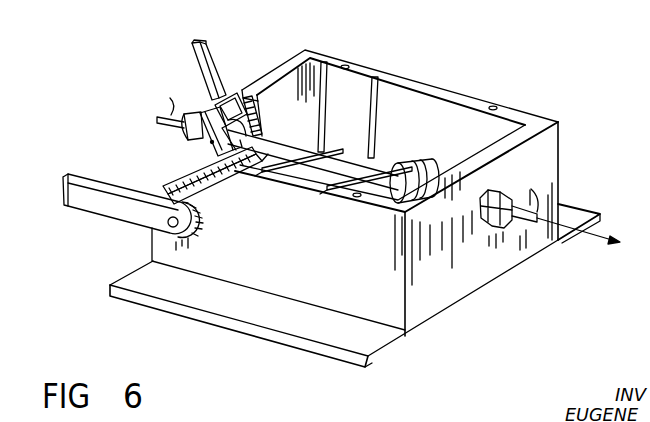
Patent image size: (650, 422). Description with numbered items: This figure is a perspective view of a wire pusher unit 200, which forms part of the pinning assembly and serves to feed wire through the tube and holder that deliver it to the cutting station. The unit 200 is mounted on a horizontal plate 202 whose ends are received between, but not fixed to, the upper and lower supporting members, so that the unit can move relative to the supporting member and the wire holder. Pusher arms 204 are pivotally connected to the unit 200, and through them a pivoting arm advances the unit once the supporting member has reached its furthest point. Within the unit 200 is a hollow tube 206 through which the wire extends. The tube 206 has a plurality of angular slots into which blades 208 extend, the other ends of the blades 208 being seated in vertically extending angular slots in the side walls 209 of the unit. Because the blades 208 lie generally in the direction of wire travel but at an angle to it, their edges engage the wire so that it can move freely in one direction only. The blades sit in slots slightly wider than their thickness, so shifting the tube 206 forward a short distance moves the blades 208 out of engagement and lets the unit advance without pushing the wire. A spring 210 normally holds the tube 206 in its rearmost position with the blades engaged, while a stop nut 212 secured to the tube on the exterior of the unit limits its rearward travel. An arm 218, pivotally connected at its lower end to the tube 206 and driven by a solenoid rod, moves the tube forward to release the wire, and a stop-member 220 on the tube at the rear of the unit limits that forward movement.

The wire pusher unit 200 is at (562, 70).
The horizontal plate 202 is at (302, 329).
The pusher arms 204 is at (116, 176).
The hollow tube 206 is at (172, 138).
The blades 208 is at (320, 143).
The side walls 209 is at (337, 277).
The spring 210 is at (416, 167).
The stop nut 212 is at (488, 227).
The arm 218 is at (213, 64).
The stop-member 220 is at (215, 150).